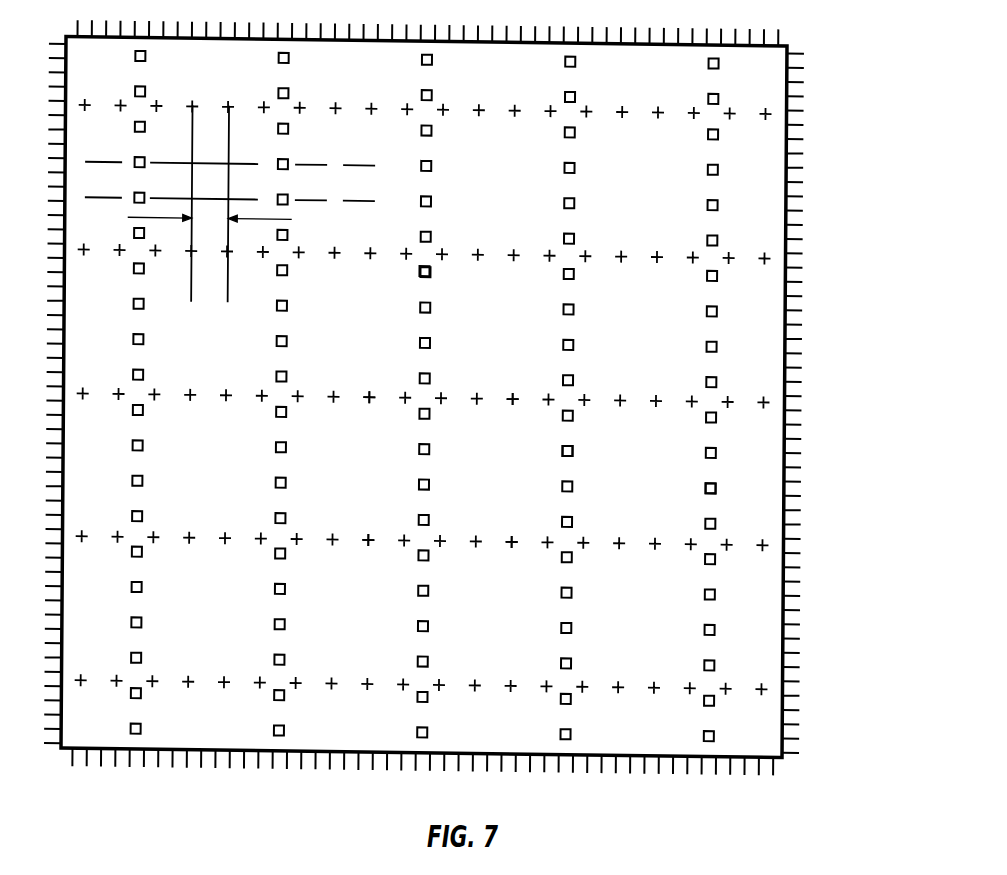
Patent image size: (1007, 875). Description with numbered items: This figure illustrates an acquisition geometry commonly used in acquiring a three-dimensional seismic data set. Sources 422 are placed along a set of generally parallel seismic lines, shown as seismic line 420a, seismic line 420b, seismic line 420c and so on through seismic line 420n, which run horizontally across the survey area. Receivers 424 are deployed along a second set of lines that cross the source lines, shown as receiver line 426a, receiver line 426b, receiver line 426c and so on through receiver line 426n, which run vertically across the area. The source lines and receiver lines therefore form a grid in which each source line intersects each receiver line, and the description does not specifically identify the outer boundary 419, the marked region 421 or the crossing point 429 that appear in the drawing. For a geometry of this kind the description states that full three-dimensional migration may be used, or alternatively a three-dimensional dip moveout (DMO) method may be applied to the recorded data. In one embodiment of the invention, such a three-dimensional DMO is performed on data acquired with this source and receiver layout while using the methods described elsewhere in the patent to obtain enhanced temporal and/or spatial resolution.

The substrate with scale border 419 is at (788, 263).
The seismic line 420a is at (750, 679).
The seismic line 420b is at (753, 537).
The seismic line 420c is at (753, 394).
The seismic line 420n is at (750, 106).
The measurement grid region with spacing d1 421 is at (240, 156).
The source 422 is at (516, 532).
The receiver 424 is at (708, 478).
The receiver line 426a is at (717, 74).
The receiver line 426b is at (572, 76).
The receiver line 426c is at (428, 75).
The receiver line 426n is at (138, 74).
The intersection of row and column 429 is at (429, 255).